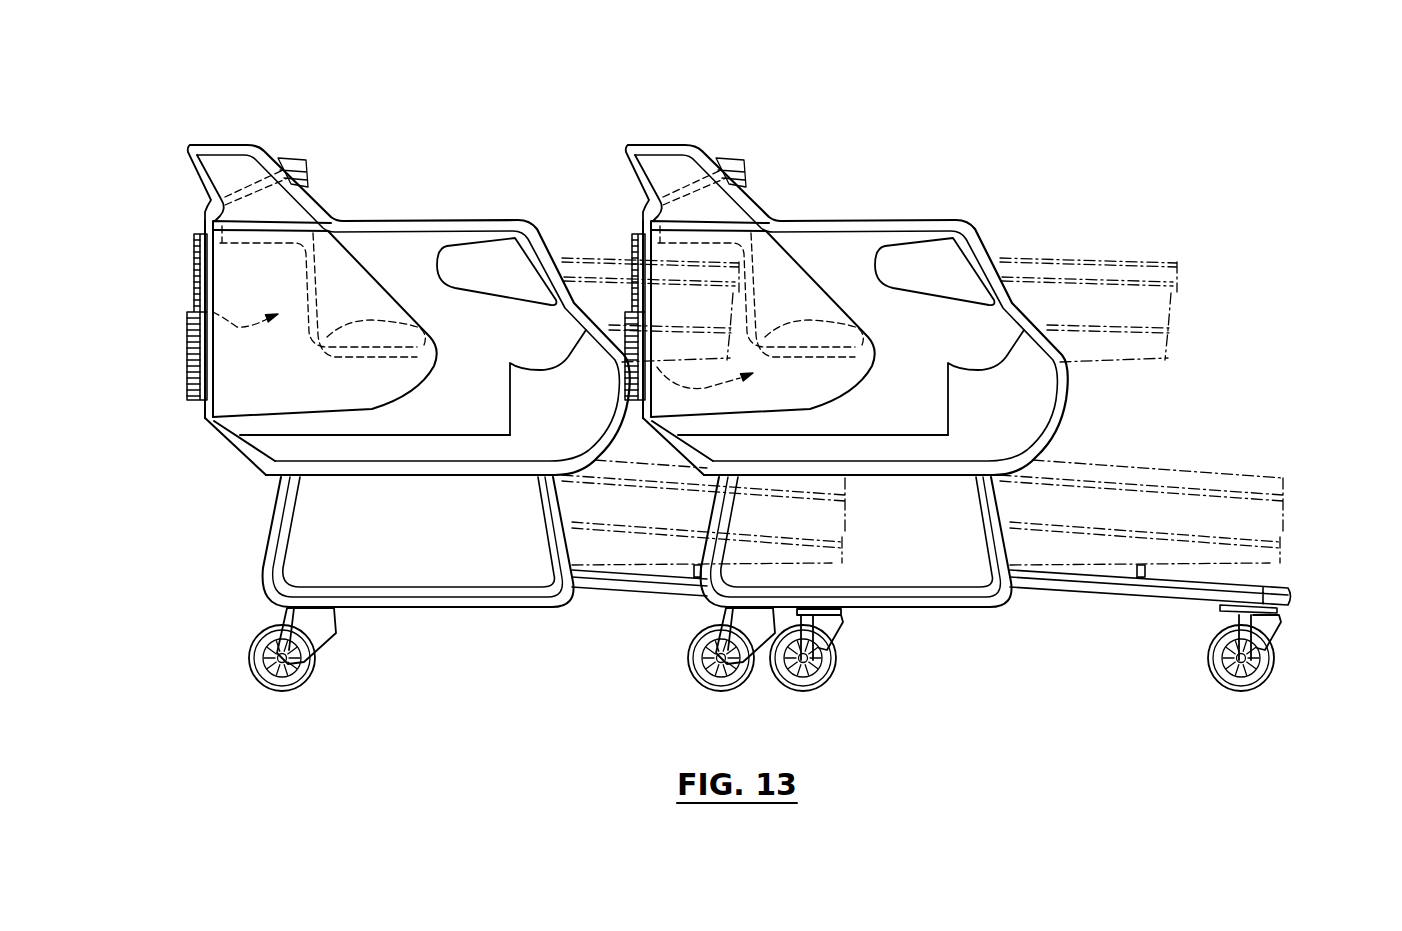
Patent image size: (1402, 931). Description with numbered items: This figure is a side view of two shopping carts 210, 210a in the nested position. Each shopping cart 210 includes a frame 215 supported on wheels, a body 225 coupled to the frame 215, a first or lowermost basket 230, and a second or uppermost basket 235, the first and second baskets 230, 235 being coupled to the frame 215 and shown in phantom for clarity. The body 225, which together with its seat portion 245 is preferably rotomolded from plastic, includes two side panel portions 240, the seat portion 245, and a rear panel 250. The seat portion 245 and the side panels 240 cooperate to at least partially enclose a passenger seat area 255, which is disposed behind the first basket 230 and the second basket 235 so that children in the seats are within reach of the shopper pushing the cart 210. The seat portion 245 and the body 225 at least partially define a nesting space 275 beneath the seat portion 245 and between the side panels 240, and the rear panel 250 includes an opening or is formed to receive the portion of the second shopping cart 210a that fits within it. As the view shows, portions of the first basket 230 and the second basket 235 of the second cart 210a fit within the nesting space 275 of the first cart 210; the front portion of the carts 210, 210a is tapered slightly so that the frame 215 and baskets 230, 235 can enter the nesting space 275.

The second shopping cart 210a is at (451, 142).
The shopping cart 210 is at (964, 188).
The frame 215 is at (407, 603).
The body 225 is at (262, 452).
The first basket 230 is at (668, 600).
The second basket 235 is at (567, 242).
The side panel portions 240 is at (573, 442).
The seat portion 245 is at (423, 326).
The rear panel 250 is at (633, 243).
The passenger seat area 255 is at (353, 298).
The nesting space 275 is at (193, 308).